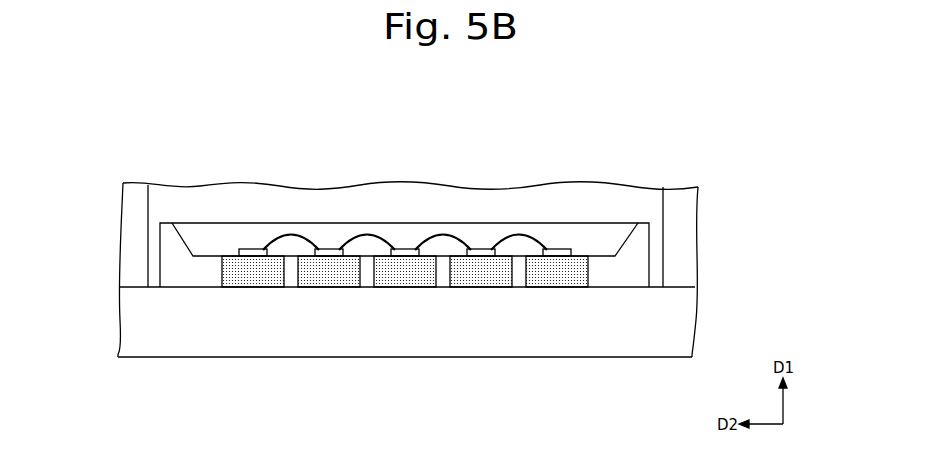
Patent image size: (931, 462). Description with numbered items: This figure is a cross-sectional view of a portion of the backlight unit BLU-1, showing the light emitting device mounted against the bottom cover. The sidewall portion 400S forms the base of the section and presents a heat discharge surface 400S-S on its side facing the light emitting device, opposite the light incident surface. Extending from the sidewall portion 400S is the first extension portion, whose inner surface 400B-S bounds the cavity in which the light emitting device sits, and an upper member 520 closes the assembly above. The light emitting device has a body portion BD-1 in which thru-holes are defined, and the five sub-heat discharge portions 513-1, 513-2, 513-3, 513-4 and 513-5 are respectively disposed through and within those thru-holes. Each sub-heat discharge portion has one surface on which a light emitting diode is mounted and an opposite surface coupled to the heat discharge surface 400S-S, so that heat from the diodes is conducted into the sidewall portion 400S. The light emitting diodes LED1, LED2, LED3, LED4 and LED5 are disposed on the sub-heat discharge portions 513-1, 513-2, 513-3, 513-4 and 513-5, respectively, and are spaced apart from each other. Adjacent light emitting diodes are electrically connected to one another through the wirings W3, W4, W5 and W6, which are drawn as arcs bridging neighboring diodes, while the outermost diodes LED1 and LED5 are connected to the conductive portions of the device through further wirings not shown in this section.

The backlight unit BLU-1 is at (668, 135).
The optical member 520 is at (647, 204).
The inner surface 400B-S is at (677, 232).
The body portion BD-1 is at (640, 253).
The heat discharge surface 400S-S is at (677, 286).
The sidewall portion 400S is at (678, 319).
The sub-heat discharge portion 513-1 is at (557, 275).
The sub-heat discharge portion 513-2 is at (481, 275).
The sub-heat discharge portion 513-3 is at (405, 275).
The sub-heat discharge portion 513-4 is at (329, 275).
The sub-heat discharge portion 513-5 is at (253, 275).
The light emitting diode LED1 is at (556, 248).
The light emitting diode LED2 is at (480, 248).
The light emitting diode LED3 is at (404, 248).
The light emitting diode LED4 is at (328, 248).
The light emitting diode LED5 is at (252, 248).
The wiring W3 is at (517, 235).
The wiring W4 is at (441, 235).
The wiring W5 is at (365, 235).
The wiring W6 is at (289, 235).